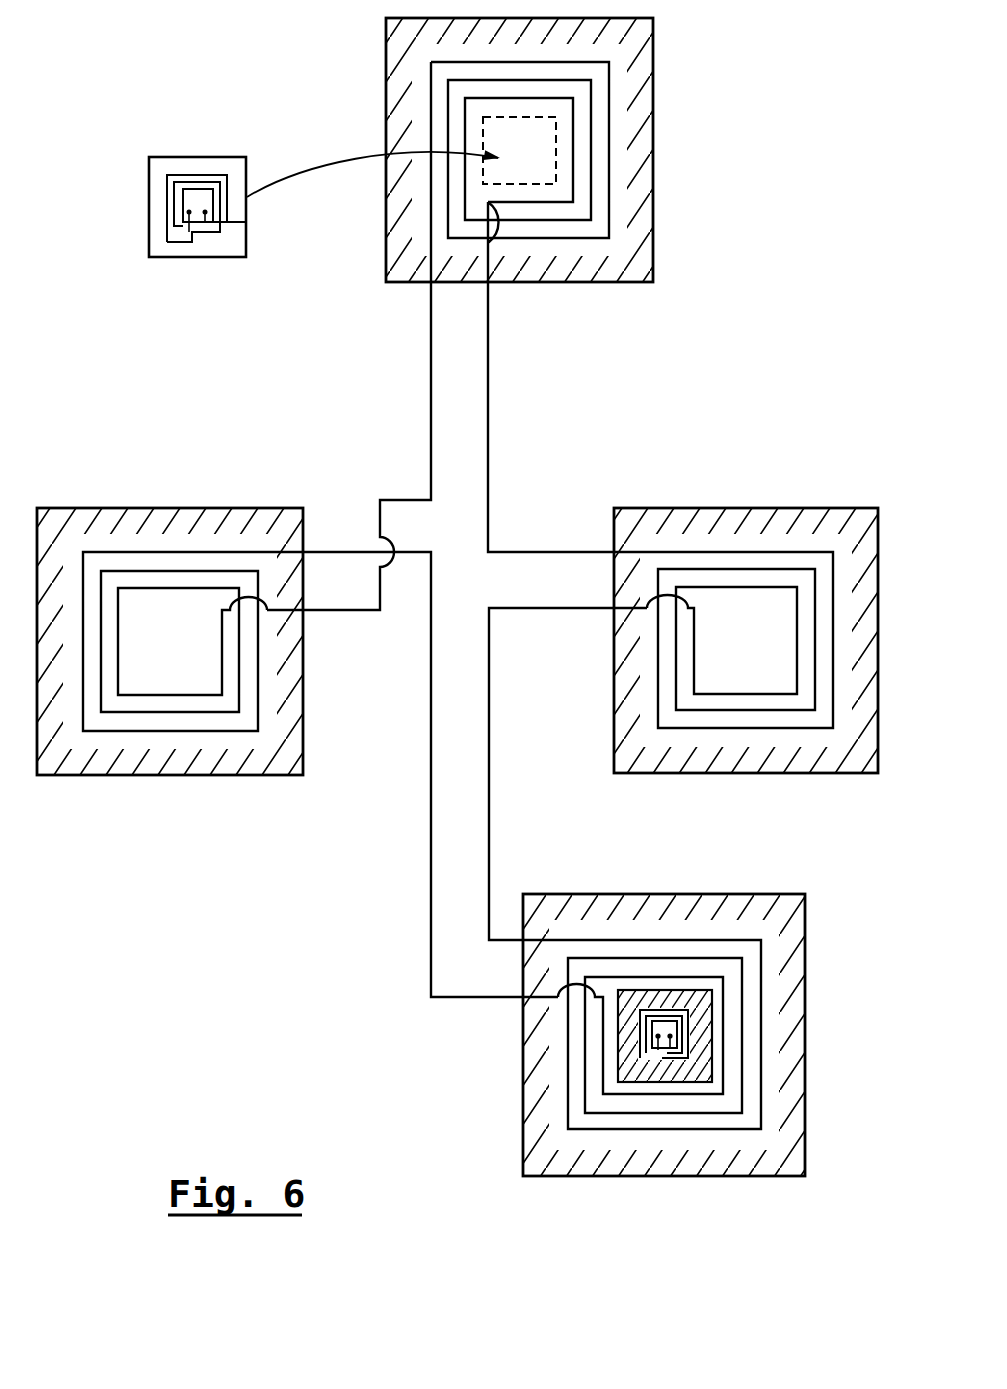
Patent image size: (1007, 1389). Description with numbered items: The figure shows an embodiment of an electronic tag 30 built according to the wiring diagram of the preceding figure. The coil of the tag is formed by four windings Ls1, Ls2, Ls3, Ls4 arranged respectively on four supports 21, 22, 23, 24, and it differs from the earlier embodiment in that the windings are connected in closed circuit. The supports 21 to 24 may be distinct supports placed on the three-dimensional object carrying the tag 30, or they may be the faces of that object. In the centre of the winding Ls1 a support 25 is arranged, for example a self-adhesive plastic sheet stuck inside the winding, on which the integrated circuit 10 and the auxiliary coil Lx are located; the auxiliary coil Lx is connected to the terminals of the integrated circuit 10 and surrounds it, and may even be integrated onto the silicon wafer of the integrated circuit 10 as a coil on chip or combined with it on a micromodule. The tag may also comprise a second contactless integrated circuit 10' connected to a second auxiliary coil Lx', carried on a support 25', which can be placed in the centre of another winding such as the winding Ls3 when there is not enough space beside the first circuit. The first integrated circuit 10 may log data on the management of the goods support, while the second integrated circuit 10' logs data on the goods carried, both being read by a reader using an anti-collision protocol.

The electronic tag 30 is at (250, 974).
The support 21 is at (760, 1175).
The support 22 is at (792, 773).
The support 23 is at (653, 237).
The support 24 is at (260, 775).
The winding Ls1 is at (762, 1075).
The winding Ls2 is at (700, 728).
The winding Ls3 is at (557, 238).
The winding Ls4 is at (130, 731).
The support 25 is at (661, 1106).
The integrated circuit 10 is at (567, 1055).
The auxiliary coil Lx is at (664, 1122).
The second transponder body 25' is at (239, 187).
The second contactless integrated circuit 10' is at (191, 173).
The second auxiliary coil Lx' is at (248, 218).